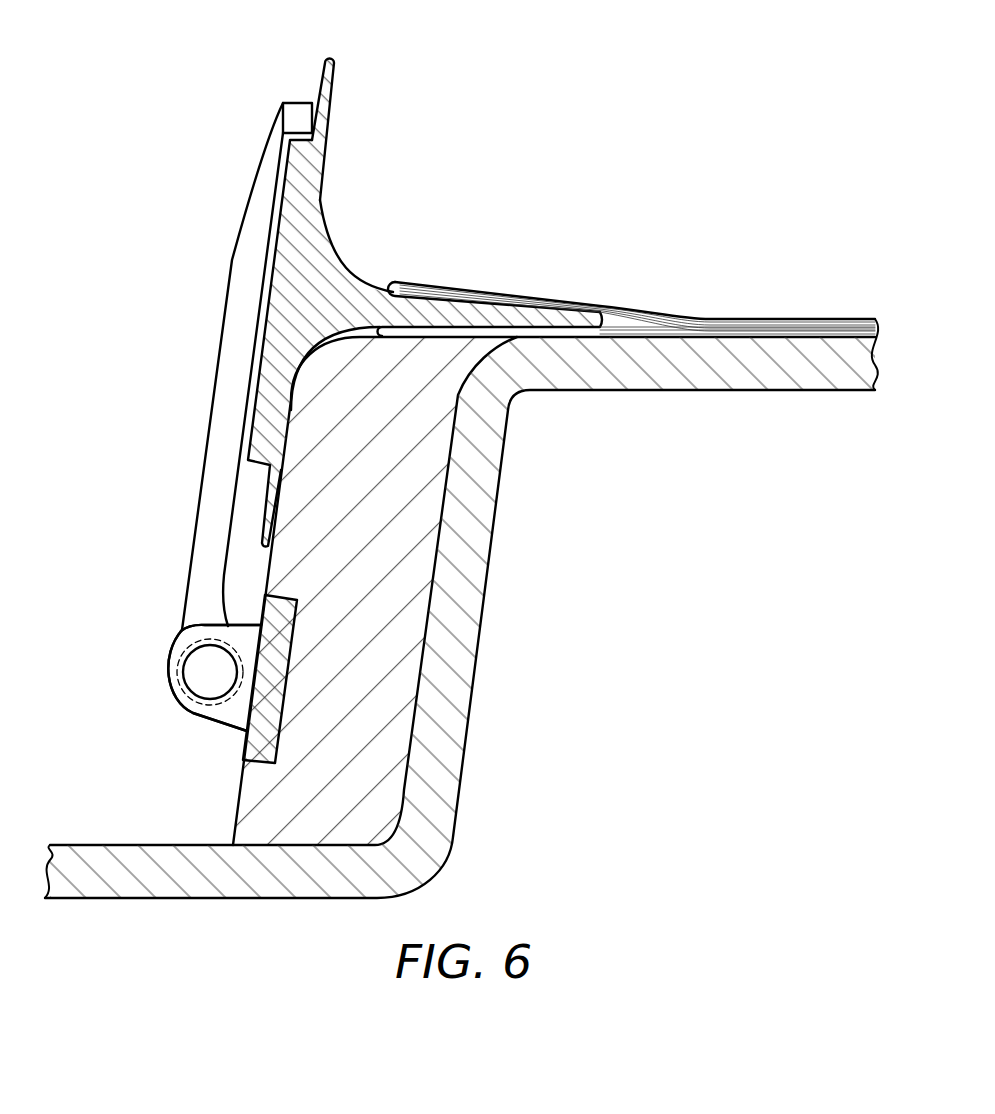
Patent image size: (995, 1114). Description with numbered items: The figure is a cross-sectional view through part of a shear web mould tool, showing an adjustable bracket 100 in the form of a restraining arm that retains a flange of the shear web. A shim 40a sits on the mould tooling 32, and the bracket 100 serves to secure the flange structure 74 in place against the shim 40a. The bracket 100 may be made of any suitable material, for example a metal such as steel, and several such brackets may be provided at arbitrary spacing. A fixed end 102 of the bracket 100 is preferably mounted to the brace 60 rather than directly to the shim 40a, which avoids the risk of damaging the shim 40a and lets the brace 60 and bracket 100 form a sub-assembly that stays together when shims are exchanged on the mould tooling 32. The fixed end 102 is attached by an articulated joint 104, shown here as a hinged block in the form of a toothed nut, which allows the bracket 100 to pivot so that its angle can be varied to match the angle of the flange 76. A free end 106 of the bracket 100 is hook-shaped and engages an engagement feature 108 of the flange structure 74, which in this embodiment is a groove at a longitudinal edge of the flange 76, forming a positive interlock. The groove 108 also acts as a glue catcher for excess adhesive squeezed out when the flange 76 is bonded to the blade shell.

The mould tooling 32 is at (478, 600).
The shim 40a is at (430, 447).
The brace 60 is at (253, 742).
The flange structure 74 is at (428, 264).
The flange 76 is at (425, 279).
The bracket 100 is at (227, 396).
The fixed end 102 is at (175, 676).
The articulated joint 104 is at (200, 674).
The free end 106 is at (284, 116).
The engagement feature 108 is at (308, 69).